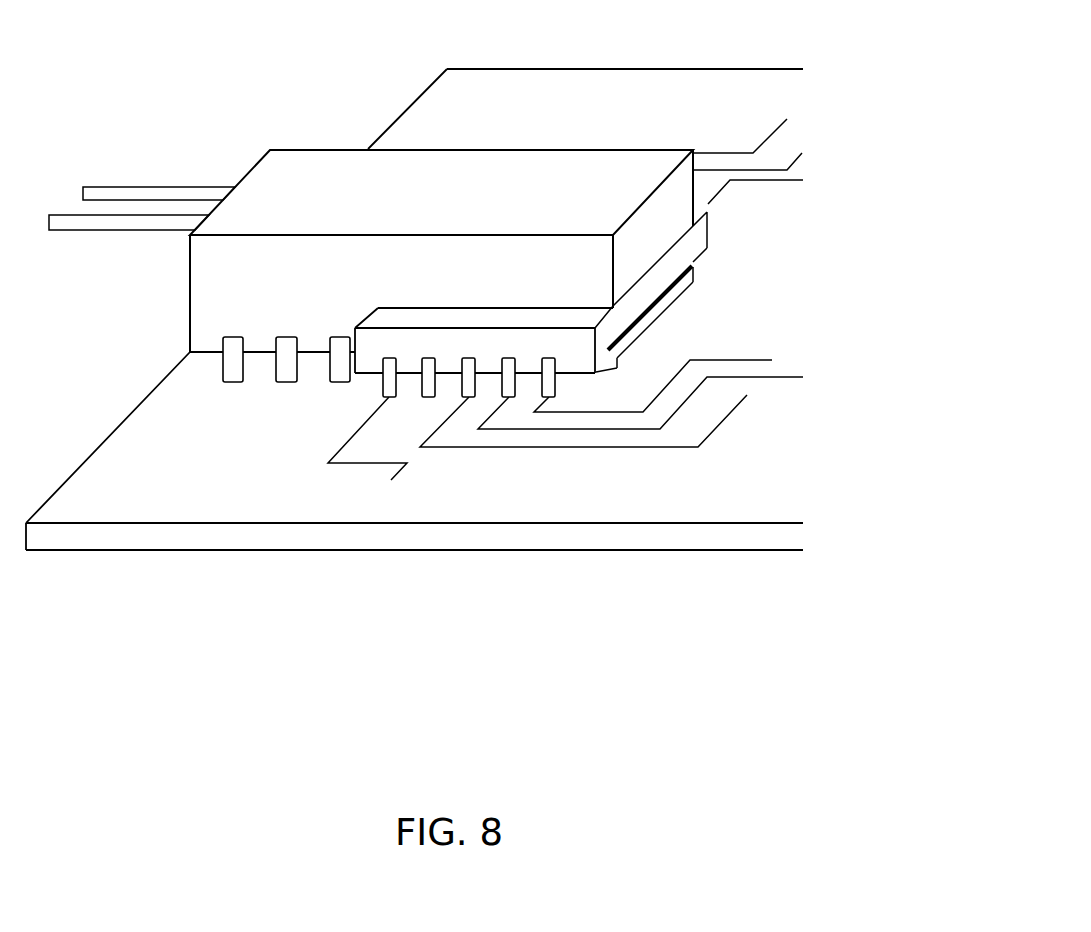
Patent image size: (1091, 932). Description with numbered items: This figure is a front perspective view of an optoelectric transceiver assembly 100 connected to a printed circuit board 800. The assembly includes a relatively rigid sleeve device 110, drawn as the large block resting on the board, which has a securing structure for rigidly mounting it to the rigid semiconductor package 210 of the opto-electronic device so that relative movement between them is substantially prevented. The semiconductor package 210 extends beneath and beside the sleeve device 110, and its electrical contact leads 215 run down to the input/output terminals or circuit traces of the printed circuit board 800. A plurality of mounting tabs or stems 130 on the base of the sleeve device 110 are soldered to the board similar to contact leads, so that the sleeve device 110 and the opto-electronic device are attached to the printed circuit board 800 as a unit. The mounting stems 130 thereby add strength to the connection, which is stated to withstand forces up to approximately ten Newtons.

The optoelectric transceiver assembly 100 is at (371, 220).
The sleeve device 110 is at (190, 268).
The mounting stems 130 is at (223, 373).
The semiconductor package 210 is at (708, 227).
The electrical contact leads 215 is at (378, 387).
The printed circuit board 800 is at (525, 69).